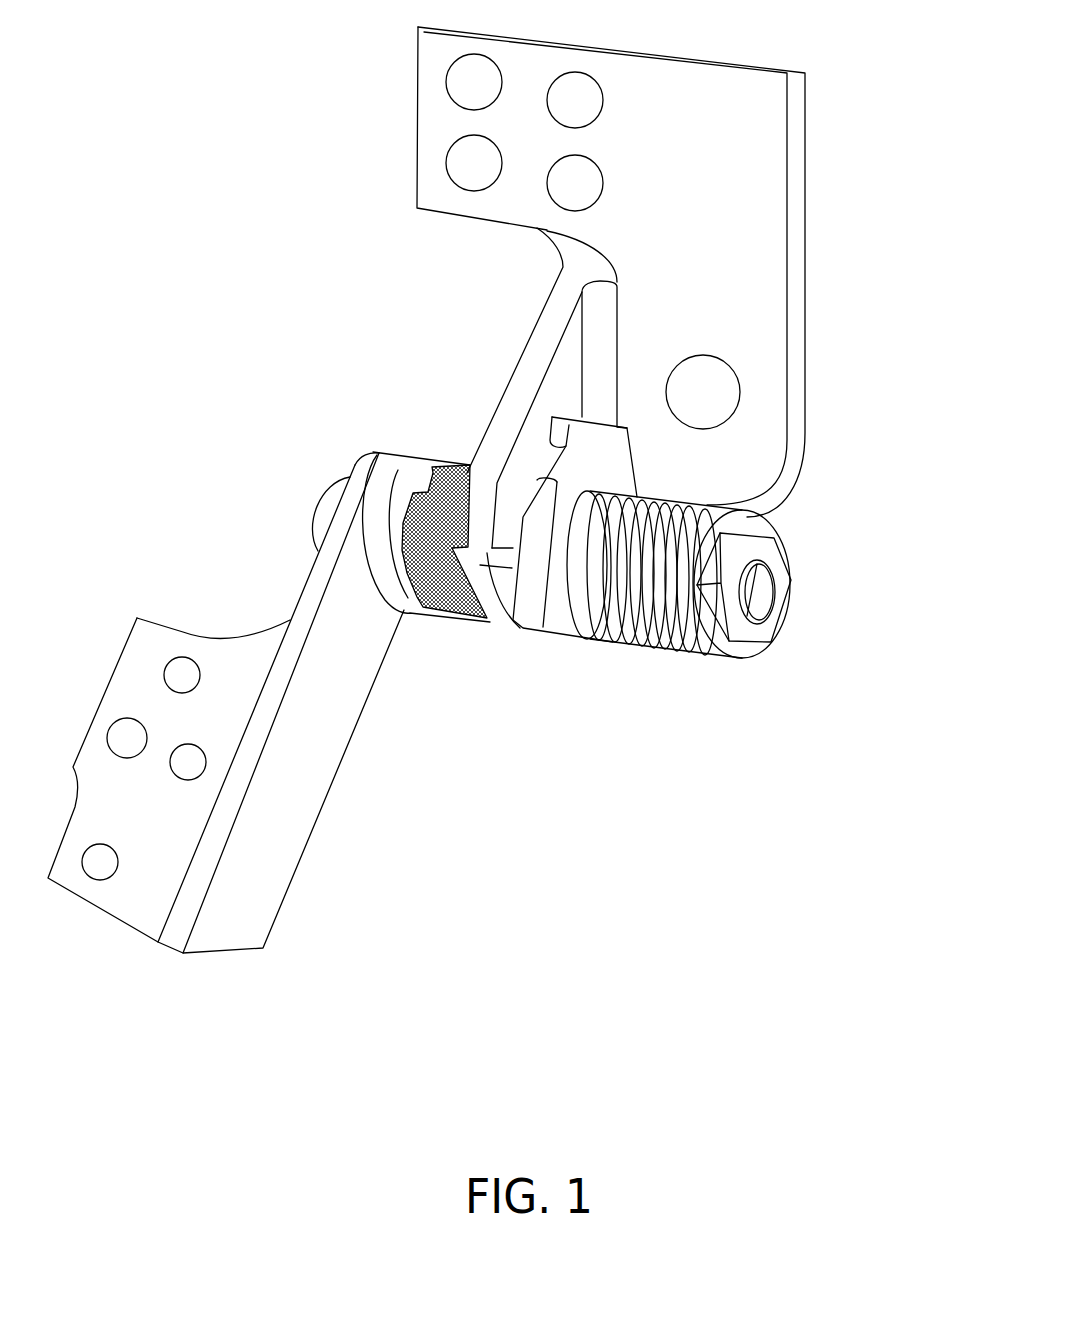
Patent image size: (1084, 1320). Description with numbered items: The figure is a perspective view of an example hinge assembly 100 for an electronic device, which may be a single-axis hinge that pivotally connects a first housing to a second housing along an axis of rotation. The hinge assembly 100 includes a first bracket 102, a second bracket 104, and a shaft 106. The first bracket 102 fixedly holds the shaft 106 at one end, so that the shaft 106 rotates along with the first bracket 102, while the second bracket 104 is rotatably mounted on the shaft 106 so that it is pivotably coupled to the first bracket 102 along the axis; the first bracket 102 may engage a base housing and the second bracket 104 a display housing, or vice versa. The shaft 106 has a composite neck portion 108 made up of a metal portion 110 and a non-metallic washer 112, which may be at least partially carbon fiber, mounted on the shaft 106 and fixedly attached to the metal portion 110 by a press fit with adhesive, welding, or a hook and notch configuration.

The hinge assembly 100 is at (652, 1075).
The first bracket 102 is at (298, 872).
The second bracket 104 is at (793, 325).
The shaft 106 is at (793, 583).
The composite neck portion 108 is at (445, 639).
The metal portion 110 is at (422, 463).
The non-metallic washer 112 is at (450, 463).